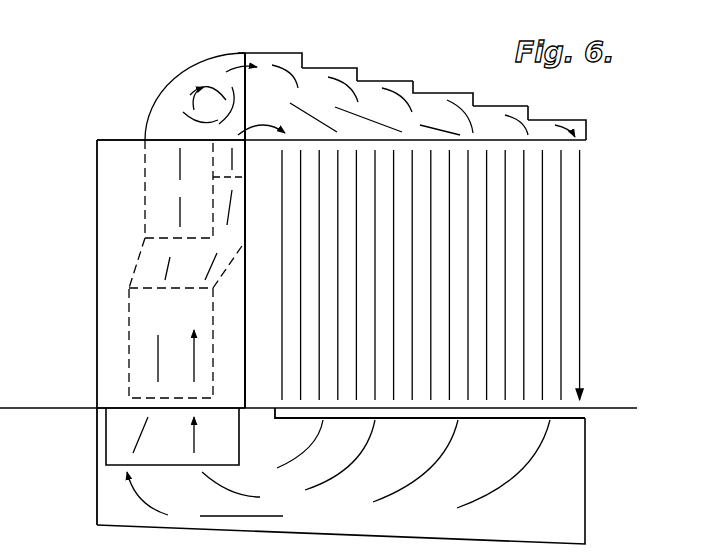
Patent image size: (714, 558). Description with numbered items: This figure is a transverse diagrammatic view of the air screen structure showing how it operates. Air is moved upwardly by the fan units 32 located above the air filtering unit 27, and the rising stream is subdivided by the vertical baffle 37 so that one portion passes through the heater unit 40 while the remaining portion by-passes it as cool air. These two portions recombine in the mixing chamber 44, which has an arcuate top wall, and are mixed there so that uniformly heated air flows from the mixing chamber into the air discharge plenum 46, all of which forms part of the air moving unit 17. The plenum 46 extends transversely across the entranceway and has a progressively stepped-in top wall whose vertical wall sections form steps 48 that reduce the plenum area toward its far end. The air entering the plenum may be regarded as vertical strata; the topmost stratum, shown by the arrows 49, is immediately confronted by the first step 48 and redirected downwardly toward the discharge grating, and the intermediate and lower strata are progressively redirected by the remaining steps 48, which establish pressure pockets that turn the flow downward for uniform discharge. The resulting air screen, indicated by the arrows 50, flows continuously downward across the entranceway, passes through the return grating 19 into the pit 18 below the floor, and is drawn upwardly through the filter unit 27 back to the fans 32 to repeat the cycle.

The air moving unit 17 is at (135, 118).
The air return plenum or pit 18 is at (575, 500).
The grill or grating 19 is at (575, 408).
The air filtering unit 27 is at (106, 437).
The air moving fan-type units 32 is at (129, 342).
The internal vertical baffle 37 is at (245, 178).
The vertical flow heater unit 40 is at (145, 238).
The mixing chamber 44 is at (218, 65).
The air discharge plenum 46 is at (374, 90).
The vertical wall sections (steps) 48 is at (302, 64).
The arrows indicating topmost air stratum 49 is at (280, 62).
The arrows indicating air screen 50 is at (282, 268).